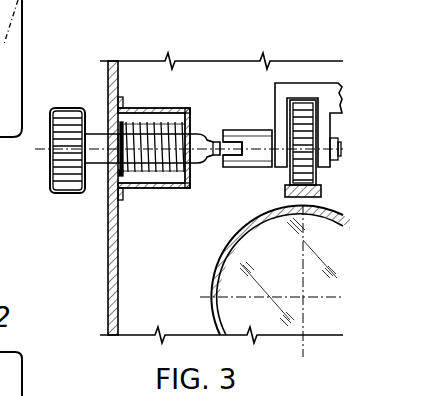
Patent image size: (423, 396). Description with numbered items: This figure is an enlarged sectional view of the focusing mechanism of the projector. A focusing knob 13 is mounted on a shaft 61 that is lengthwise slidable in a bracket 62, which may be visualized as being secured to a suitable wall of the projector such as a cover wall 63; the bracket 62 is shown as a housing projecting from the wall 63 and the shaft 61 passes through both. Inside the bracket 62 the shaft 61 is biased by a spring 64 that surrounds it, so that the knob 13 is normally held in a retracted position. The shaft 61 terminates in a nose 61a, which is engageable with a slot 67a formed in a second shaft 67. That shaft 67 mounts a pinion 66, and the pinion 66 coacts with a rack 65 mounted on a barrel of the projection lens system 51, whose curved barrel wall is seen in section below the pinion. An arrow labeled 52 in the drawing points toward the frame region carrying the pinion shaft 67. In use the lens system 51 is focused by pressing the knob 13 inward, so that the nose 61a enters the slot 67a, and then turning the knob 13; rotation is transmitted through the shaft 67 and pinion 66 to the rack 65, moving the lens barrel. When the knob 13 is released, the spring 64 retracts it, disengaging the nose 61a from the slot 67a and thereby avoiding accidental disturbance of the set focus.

The focusing knob 13 is at (60, 172).
The projection lens system 51 is at (212, 265).
The frame 52 is at (263, 184).
The shaft 61 is at (192, 138).
The nose 61a is at (213, 133).
The bracket 62 is at (150, 190).
The cover wall 63 is at (110, 258).
The spring 64 is at (146, 130).
The rack 65 is at (276, 195).
The pinion 66 is at (303, 107).
The shaft 67 is at (258, 136).
The slot 67a is at (229, 158).